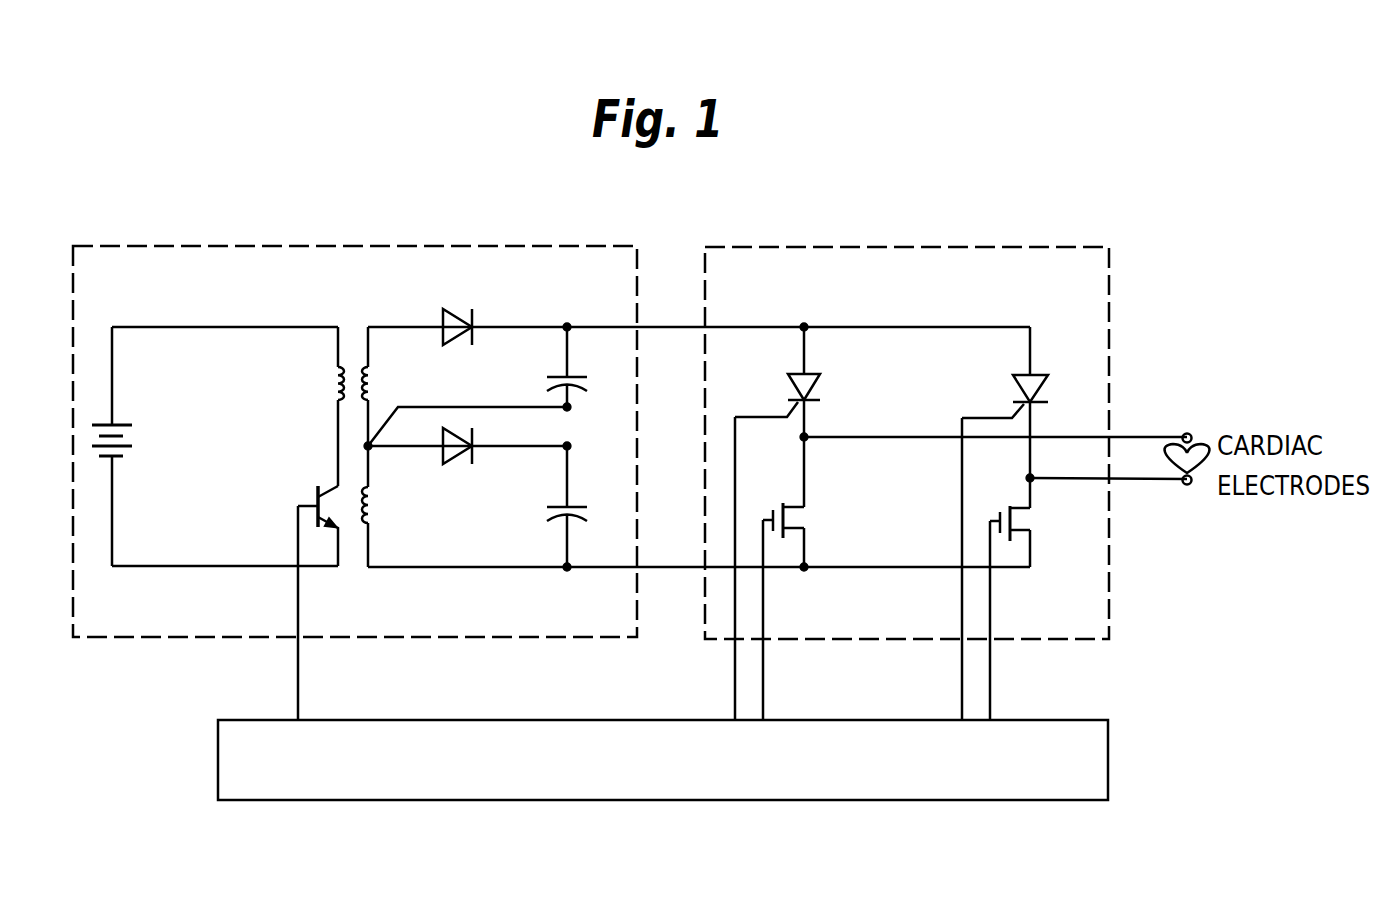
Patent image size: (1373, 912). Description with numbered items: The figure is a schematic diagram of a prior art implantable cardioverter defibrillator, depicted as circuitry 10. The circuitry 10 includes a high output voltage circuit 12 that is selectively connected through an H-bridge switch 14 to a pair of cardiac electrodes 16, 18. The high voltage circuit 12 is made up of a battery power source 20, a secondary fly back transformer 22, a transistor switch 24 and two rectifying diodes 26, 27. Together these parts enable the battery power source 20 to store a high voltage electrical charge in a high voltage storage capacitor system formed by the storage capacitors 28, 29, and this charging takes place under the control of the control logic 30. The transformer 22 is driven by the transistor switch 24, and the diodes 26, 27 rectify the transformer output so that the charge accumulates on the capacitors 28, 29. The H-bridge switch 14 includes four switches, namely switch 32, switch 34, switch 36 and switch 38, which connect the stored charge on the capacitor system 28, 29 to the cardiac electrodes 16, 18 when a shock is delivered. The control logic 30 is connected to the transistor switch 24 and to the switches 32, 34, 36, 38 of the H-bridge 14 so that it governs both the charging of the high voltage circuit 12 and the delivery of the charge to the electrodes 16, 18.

The circuitry 10 is at (983, 54).
The high output voltage circuit 12 is at (222, 244).
The H-bridge switch 14 is at (1071, 246).
The cardiac electrode 16 is at (1187, 485).
The cardiac electrode 18 is at (1187, 433).
The battery power source 20 is at (122, 451).
The secondary fly back transformer 22 is at (336, 384).
The transistor switch 24 is at (316, 496).
The rectifying diode 26 is at (443, 335).
The rectifying diode 27 is at (443, 455).
The high voltage storage capacitor 28 is at (558, 377).
The high voltage storage capacitor 29 is at (558, 507).
The control logic 30 is at (823, 802).
The switch 32 is at (800, 373).
The switch 34 is at (1025, 375).
The switch 36 is at (785, 504).
The switch 38 is at (1010, 507).